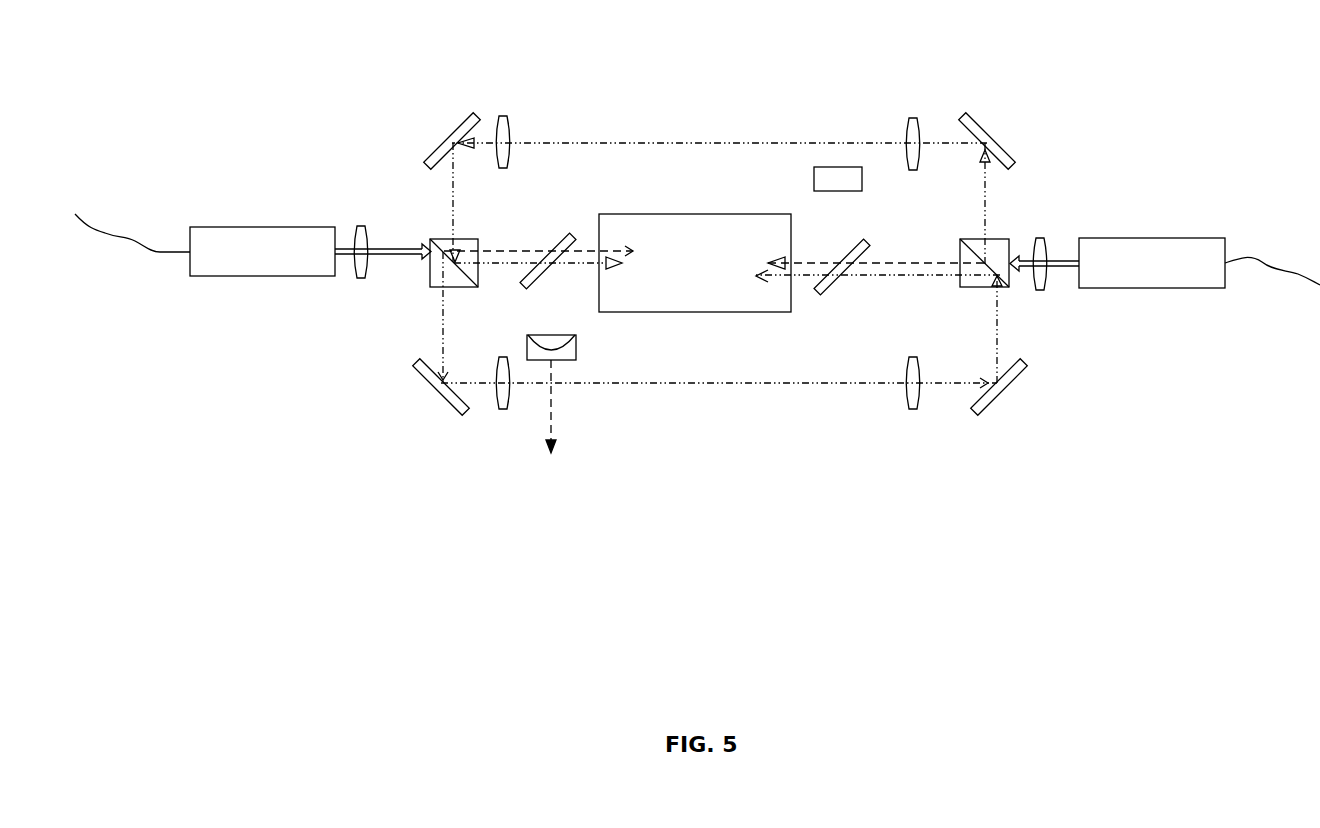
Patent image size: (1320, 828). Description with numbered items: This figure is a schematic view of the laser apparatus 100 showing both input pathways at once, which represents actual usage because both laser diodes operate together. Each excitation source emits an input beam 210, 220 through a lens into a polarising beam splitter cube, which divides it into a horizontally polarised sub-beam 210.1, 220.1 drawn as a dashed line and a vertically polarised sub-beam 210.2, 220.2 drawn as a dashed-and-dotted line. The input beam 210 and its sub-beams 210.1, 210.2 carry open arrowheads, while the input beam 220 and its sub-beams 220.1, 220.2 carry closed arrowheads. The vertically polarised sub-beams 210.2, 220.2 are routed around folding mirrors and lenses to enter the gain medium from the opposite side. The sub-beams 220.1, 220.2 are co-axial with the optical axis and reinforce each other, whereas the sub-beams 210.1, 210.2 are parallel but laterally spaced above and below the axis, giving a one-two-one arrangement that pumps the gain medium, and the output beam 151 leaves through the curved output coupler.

The laser apparatus 100 is at (283, 66).
The input beam 210 is at (380, 248).
The horizontally polarised sub-beam 210.1 is at (526, 250).
The vertically polarised sub-beam 210.2 is at (440, 308).
The input beam 220 is at (1062, 260).
The horizontally polarised sub-beam 220.1 is at (826, 262).
The vertically polarised sub-beam 220.2 is at (742, 143).
The output beam 151 is at (551, 405).